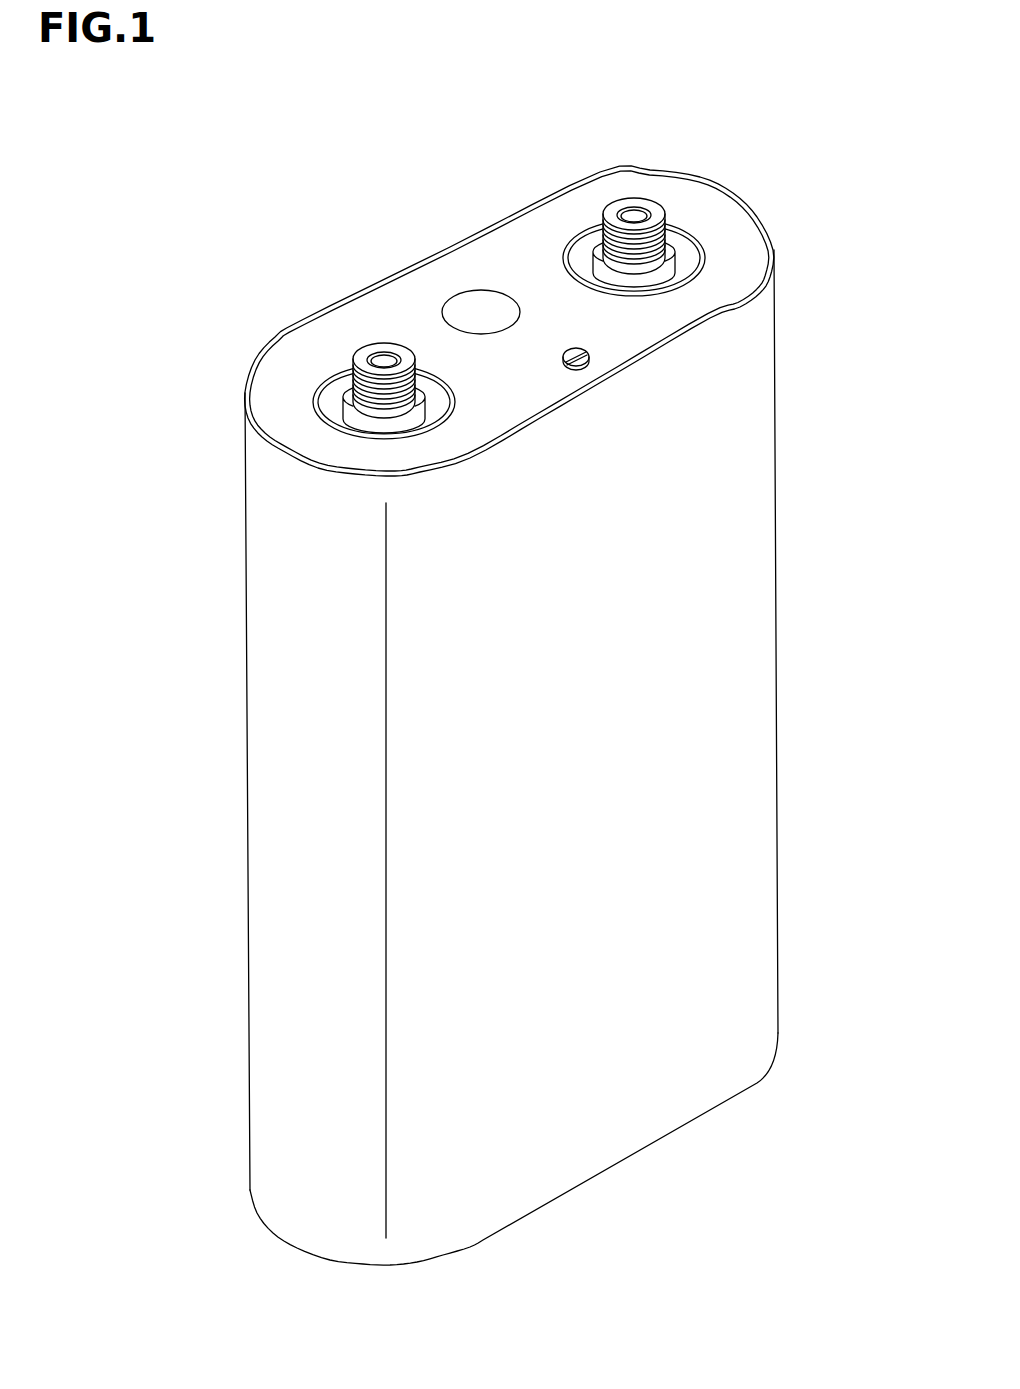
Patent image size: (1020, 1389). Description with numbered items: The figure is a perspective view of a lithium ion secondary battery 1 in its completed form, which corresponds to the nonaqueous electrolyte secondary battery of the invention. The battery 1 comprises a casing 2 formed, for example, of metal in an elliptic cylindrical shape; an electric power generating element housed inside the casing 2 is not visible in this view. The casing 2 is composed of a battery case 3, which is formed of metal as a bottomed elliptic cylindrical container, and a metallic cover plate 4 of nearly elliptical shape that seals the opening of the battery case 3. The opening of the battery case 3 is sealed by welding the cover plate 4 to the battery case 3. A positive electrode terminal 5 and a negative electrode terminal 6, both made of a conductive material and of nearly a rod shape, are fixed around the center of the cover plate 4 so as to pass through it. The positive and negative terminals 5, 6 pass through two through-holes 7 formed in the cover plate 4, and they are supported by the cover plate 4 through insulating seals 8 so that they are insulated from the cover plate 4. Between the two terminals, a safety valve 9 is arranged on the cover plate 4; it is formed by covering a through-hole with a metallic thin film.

The lithium ion secondary battery 1 is at (835, 425).
The casing 2 is at (833, 155).
The battery case 3 is at (753, 338).
The cover plate 4 is at (698, 208).
The positive electrode terminal 5 is at (368, 347).
The negative electrode terminal 6 is at (637, 198).
The through-holes 7 is at (332, 408).
The insulating seals 8 is at (348, 395).
The safety valve 9 is at (463, 290).